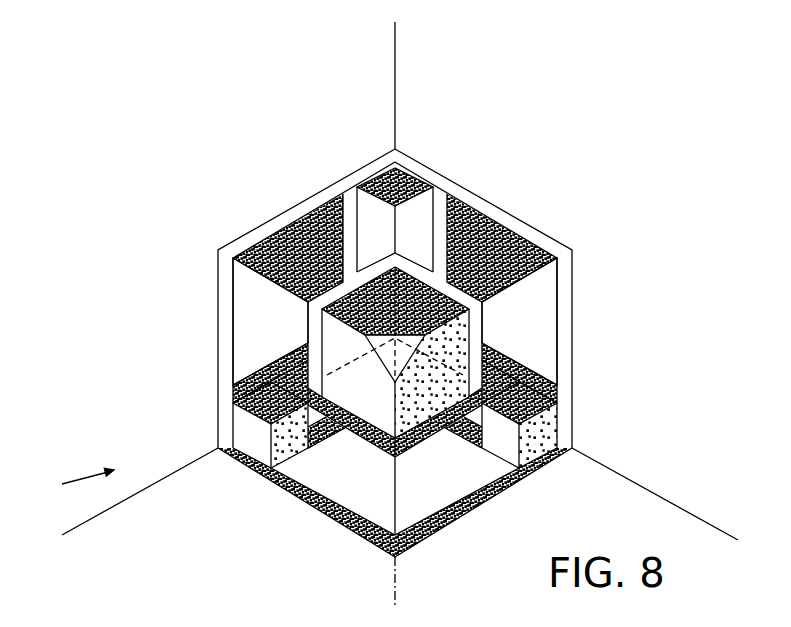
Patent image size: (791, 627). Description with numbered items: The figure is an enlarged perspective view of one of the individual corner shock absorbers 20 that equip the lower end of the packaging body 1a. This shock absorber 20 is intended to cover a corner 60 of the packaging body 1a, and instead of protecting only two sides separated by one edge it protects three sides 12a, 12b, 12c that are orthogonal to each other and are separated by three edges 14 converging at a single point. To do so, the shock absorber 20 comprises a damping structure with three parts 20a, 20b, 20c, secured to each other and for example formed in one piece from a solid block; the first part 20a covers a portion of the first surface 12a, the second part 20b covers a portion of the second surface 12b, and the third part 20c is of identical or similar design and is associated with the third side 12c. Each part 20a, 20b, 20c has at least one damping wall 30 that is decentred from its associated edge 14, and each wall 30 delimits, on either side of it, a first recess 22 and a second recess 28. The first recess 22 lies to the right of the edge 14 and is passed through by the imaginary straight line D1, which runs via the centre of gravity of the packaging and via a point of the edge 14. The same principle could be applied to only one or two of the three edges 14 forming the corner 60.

The packaging body 1a is at (75, 481).
The first surface 12a is at (130, 355).
The second surface 12b is at (176, 490).
The third side 12c is at (490, 135).
The edge 14 is at (402, 124).
The shock absorber 20 is at (387, 338).
The first part 20a is at (248, 216).
The second part 20b is at (306, 524).
The third part 20c is at (566, 228).
The first recess 22 is at (388, 172).
The second recess 28 is at (253, 293).
The damping wall 30 is at (352, 205).
The corner 60 is at (340, 297).
The imaginary straight line D1 is at (398, 600).